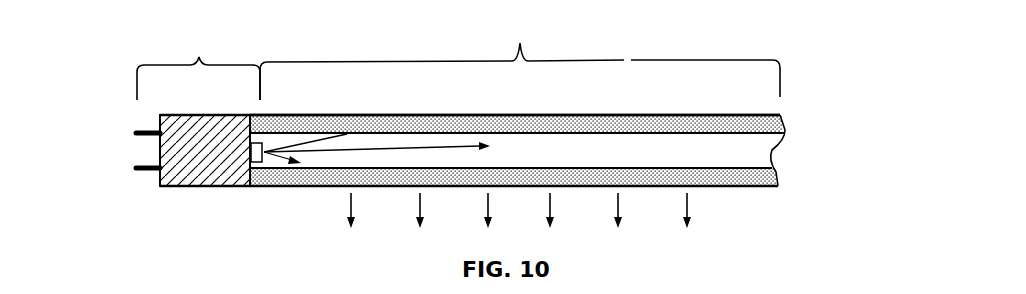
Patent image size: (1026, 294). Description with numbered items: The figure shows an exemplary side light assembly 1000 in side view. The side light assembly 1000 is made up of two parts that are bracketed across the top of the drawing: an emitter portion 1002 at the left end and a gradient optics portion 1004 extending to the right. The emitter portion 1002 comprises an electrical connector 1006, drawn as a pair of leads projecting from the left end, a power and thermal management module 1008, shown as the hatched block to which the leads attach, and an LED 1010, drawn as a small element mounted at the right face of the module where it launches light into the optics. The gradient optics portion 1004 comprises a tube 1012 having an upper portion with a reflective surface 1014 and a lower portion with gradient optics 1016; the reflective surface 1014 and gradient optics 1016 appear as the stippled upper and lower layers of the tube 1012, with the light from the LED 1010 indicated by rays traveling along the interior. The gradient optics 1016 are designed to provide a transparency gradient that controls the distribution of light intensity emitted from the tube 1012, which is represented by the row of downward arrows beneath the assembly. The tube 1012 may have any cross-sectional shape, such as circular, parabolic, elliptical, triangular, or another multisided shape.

The side light assembly 1000 is at (796, 47).
The emitter portion 1002 is at (199, 57).
The gradient optics portion 1004 is at (520, 43).
The electrical connector 1006 is at (125, 185).
The power and thermal management module 1008 is at (203, 152).
The LED 1010 is at (257, 154).
The tube 1012 is at (641, 114).
The reflective surface 1014 is at (747, 123).
The gradient optics 1016 is at (732, 177).